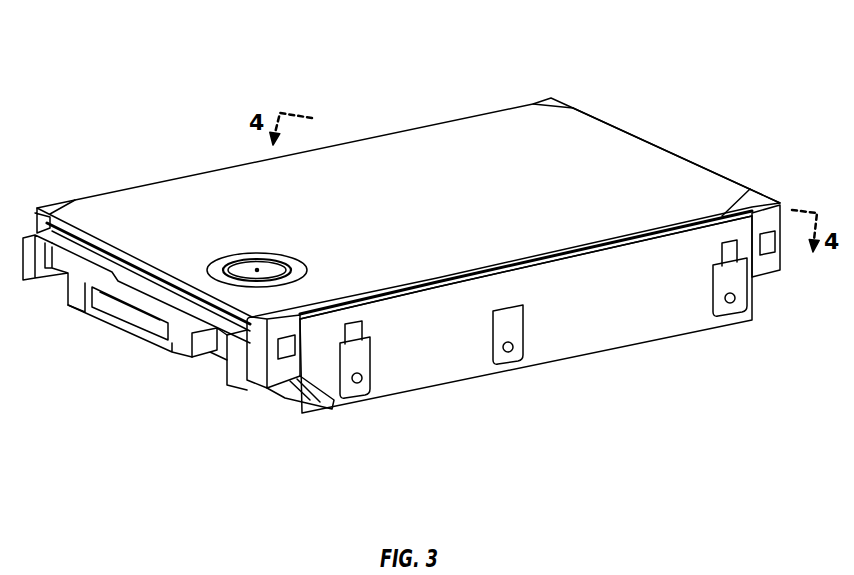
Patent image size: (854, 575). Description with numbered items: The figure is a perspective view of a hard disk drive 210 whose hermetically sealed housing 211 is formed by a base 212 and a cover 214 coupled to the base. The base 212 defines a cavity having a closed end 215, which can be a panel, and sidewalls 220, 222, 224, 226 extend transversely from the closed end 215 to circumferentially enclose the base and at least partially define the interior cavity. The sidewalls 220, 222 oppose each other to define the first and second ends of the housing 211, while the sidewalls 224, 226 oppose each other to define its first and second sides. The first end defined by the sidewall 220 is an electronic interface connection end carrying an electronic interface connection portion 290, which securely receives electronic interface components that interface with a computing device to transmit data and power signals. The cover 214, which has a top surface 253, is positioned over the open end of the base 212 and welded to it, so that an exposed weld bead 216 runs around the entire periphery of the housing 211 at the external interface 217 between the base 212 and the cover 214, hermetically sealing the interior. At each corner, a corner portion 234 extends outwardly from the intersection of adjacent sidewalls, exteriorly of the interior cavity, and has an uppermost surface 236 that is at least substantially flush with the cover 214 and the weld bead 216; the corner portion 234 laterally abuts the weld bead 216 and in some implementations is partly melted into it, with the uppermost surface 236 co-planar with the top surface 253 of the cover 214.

The hard disk drive 210 is at (418, 245).
The hermetically sealed housing 211 is at (436, 408).
The base 212 is at (709, 337).
The cover 214 is at (388, 148).
The closed end 215 is at (499, 368).
The weld bead 216 is at (733, 200).
The external interface 217 is at (190, 298).
The sidewall 220 is at (142, 278).
The sidewall 222 is at (657, 145).
The sidewall 224 is at (387, 364).
The sidewall 226 is at (20, 233).
The corner portion 234 is at (541, 93).
The uppermost surface 236 is at (556, 105).
The top surface 253 is at (247, 205).
The electronic interface connection portion 290 is at (202, 348).